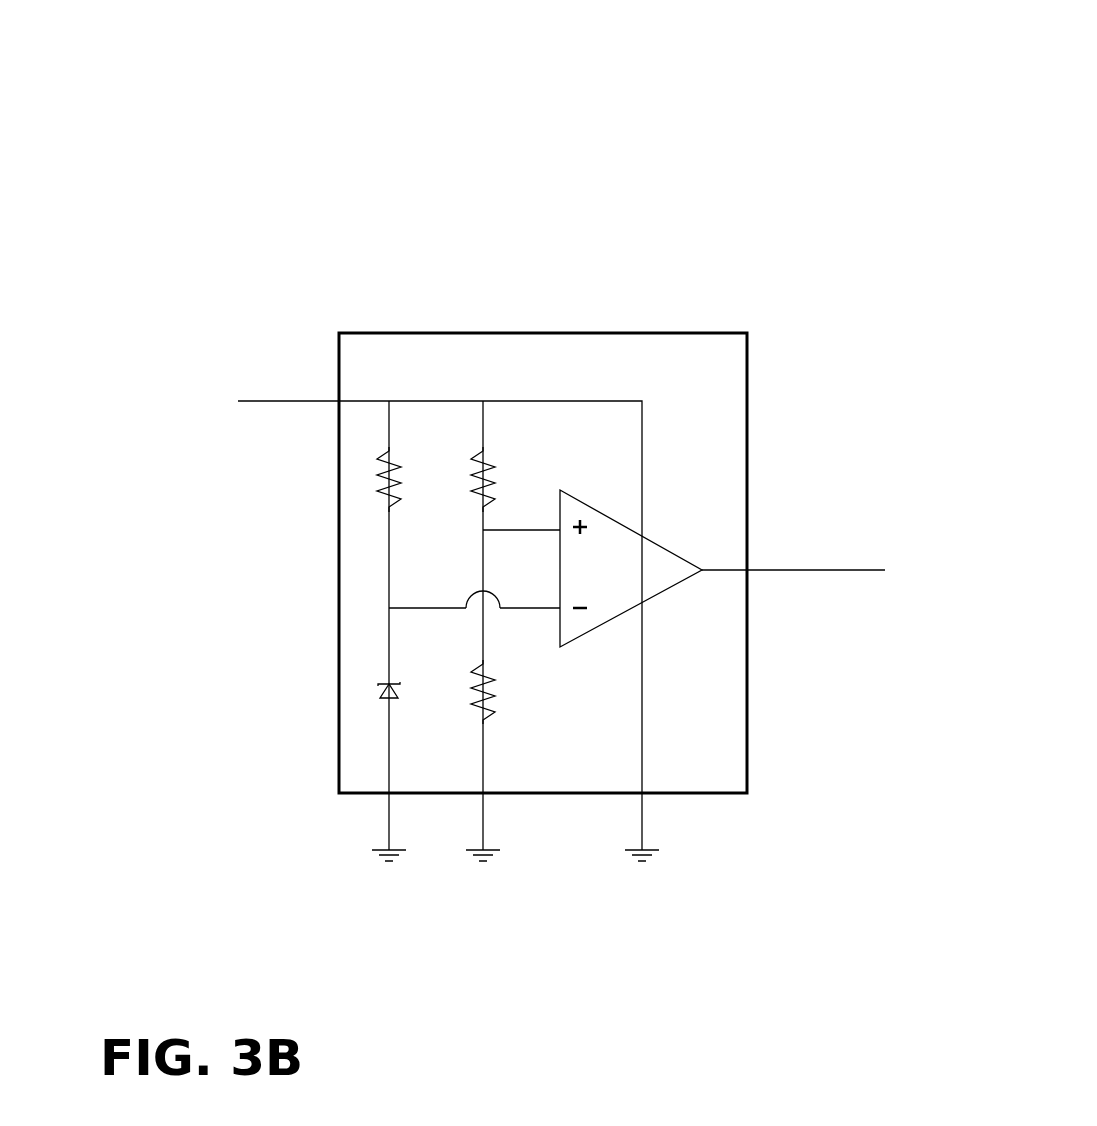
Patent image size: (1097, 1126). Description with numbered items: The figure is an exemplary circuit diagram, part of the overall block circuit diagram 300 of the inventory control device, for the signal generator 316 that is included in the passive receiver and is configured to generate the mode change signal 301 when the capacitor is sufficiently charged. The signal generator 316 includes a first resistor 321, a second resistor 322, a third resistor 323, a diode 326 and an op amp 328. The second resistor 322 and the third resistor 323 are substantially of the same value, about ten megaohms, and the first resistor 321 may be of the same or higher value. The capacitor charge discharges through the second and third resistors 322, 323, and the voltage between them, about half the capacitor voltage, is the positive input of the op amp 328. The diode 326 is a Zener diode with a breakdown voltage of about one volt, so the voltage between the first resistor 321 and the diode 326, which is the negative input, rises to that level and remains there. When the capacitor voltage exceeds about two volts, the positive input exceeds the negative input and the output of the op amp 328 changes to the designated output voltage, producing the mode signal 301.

The block circuit diagram 300 is at (755, 102).
The mode change signal 301 is at (271, 399).
The signal generator 316 is at (471, 333).
The first resistor (R1) 321 is at (367, 476).
The second resistor (R2) 322 is at (532, 456).
The third resistor (R3) 323 is at (509, 698).
The diode (D) 326 is at (367, 683).
The op amp 328 is at (662, 515).